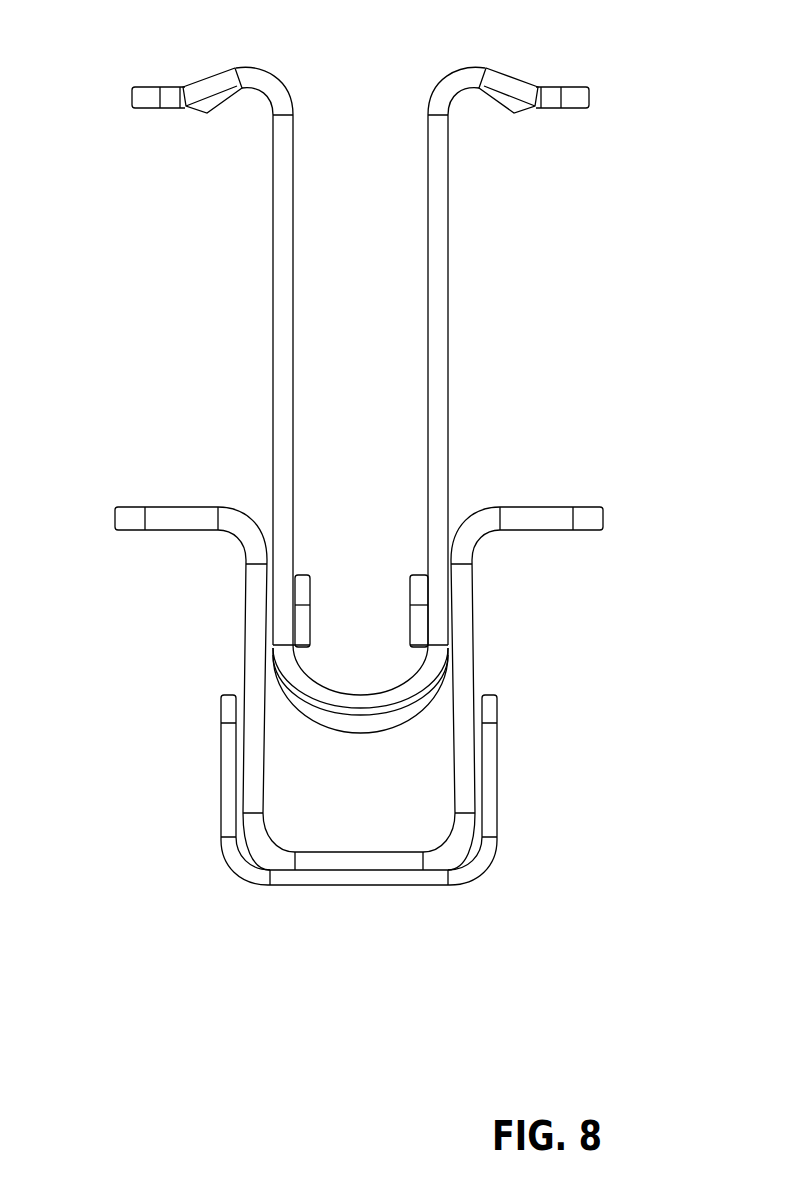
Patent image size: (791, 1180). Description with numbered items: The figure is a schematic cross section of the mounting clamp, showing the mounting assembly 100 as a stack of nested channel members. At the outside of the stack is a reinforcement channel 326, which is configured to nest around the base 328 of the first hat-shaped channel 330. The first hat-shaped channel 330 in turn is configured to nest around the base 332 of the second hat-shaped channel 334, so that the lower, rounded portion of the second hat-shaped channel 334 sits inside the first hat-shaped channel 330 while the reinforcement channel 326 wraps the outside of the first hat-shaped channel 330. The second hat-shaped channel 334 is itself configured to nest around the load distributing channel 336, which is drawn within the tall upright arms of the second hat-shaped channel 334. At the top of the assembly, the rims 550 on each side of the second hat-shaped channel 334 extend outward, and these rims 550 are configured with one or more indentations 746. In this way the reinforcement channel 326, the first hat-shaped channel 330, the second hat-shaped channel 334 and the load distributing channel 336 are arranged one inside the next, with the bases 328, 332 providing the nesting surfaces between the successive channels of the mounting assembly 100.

The mounting assembly 100 is at (203, 307).
The second hat-shaped channel 334 is at (450, 296).
The rims 550 is at (140, 86).
The indentations 746 is at (217, 96).
The load distributing channel 336 is at (298, 627).
The base of the second hat-shaped channel 332 is at (362, 735).
The first hat-shaped channel 330 is at (476, 670).
The base of the first hat-shaped channel 328 is at (385, 853).
The reinforcement channel 326 is at (308, 886).